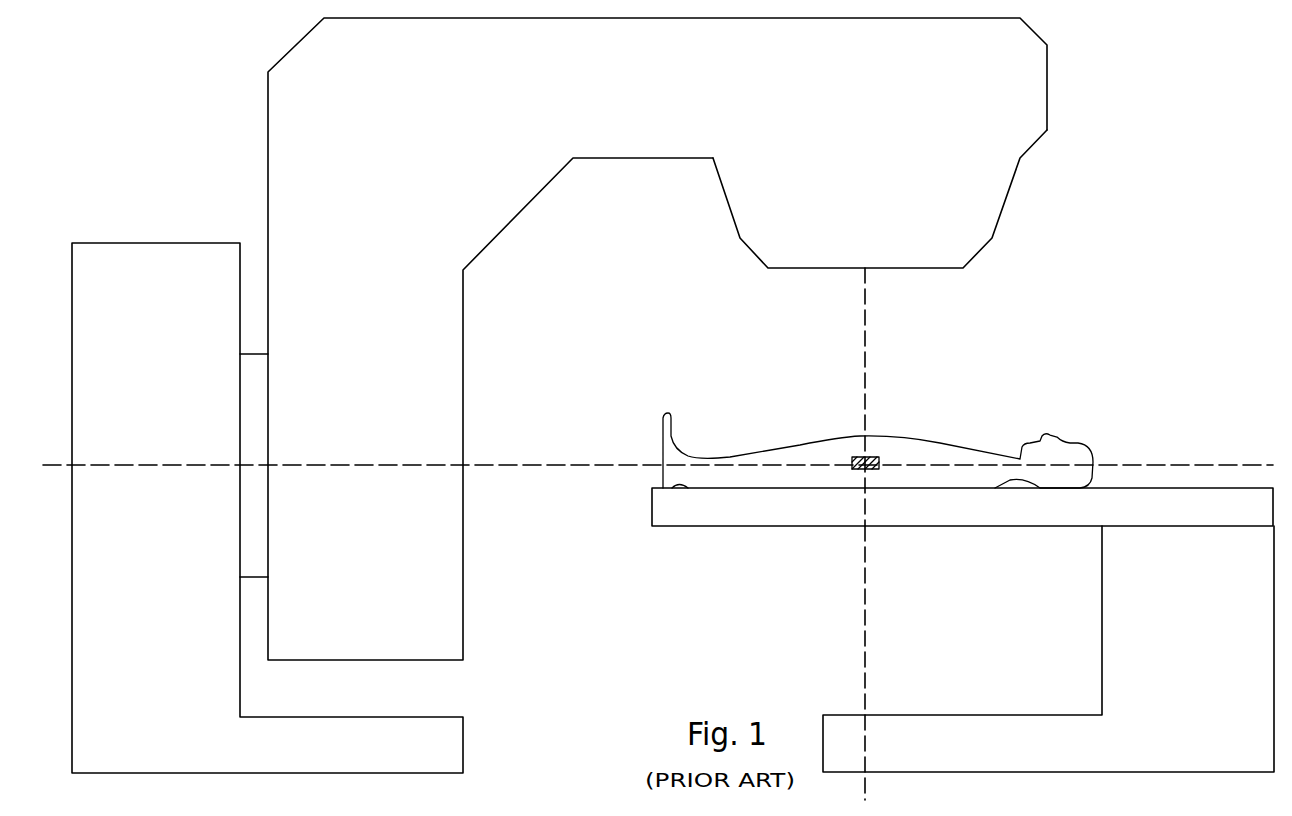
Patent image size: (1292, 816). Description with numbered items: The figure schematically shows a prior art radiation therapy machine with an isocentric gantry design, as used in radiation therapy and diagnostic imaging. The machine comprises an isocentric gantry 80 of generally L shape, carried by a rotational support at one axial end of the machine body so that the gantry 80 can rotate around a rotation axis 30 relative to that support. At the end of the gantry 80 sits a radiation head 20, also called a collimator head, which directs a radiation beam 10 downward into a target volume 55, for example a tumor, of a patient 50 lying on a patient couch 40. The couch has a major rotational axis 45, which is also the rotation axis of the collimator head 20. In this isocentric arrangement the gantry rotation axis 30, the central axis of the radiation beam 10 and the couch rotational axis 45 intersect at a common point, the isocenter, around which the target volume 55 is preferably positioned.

The radiation beam 10 is at (866, 352).
The radiation head 20 is at (881, 229).
The rotation axis 30 is at (503, 465).
The patient couch 40 is at (1188, 516).
The major rotational axis of the treatment couch 45 is at (866, 623).
The patient 50 is at (1079, 443).
The target volume 55 is at (879, 457).
The isocentric gantry 80 is at (379, 174).